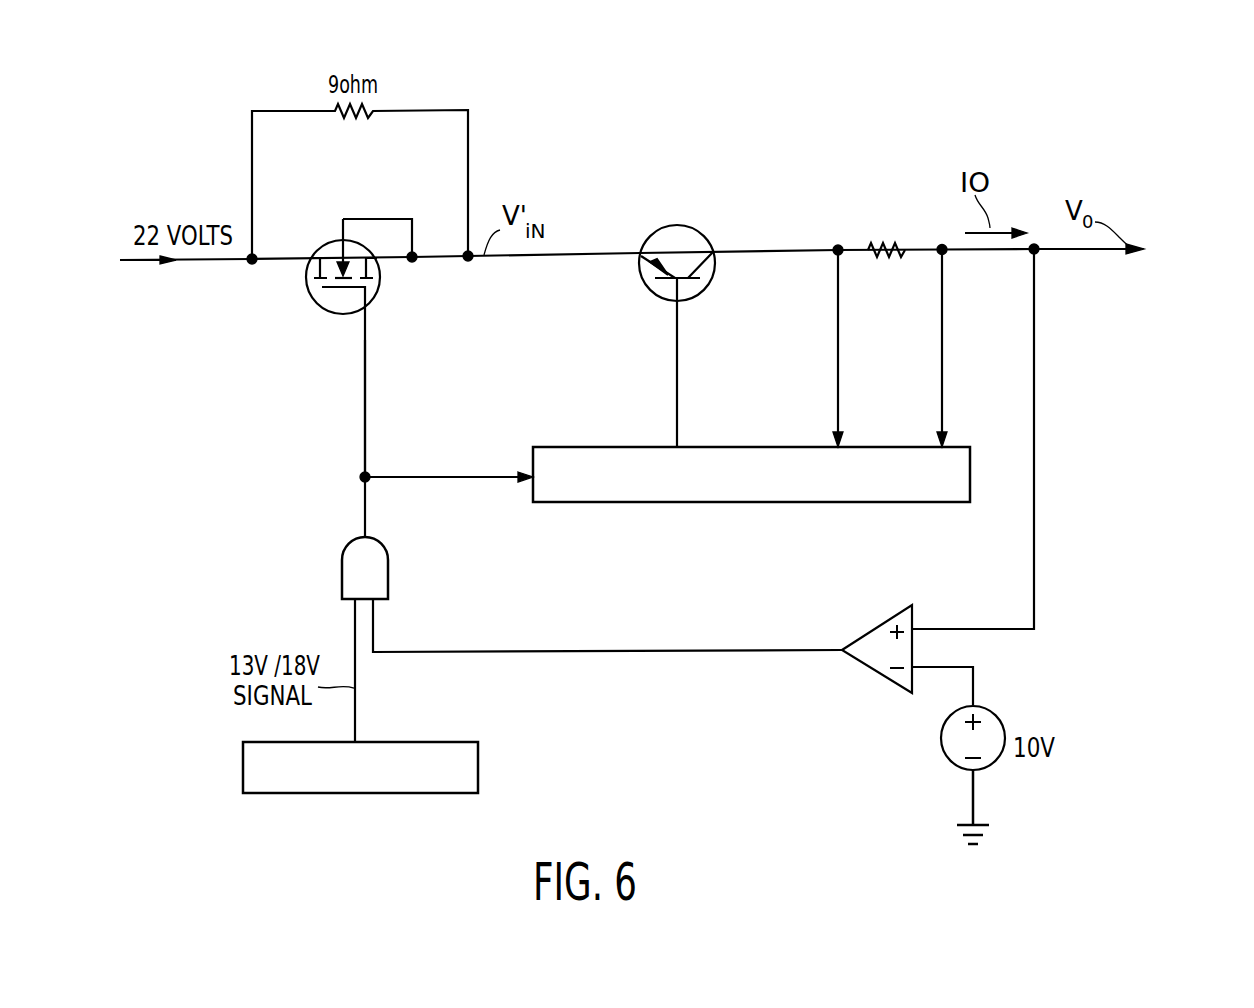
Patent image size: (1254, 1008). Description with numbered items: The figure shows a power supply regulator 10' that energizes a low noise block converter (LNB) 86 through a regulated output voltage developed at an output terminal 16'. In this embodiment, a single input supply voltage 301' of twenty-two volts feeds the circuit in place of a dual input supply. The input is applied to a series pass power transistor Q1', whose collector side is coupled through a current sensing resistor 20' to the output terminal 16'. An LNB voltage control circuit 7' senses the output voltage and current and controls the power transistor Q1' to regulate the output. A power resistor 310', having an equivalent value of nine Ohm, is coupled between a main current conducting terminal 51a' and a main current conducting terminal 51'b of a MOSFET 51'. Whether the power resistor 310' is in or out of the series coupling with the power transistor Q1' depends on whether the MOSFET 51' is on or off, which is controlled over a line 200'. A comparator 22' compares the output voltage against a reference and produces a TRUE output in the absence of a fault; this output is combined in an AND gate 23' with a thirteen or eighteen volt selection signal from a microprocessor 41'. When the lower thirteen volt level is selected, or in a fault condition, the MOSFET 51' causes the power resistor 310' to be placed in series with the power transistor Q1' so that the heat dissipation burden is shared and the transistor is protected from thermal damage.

The single input supply voltage 301' is at (165, 294).
The power resistor 310' is at (360, 181).
The main current conducting terminal 51a' is at (269, 287).
The main current conducting terminal 51'b is at (460, 286).
The MOSFET 51' is at (361, 348).
The switch control line 200' is at (336, 408).
The power transistor Q1' is at (696, 323).
The current sensing resistor 20' is at (890, 225).
The power supply regulator 10' is at (890, 349).
The output terminal 16' is at (1013, 436).
The low noise block converter (LNB) 86 is at (1135, 264).
The LNB voltage control circuit 7' is at (751, 503).
The AND gate 23' is at (564, 609).
The microprocessor 41' is at (394, 767).
The comparator 22' is at (901, 640).